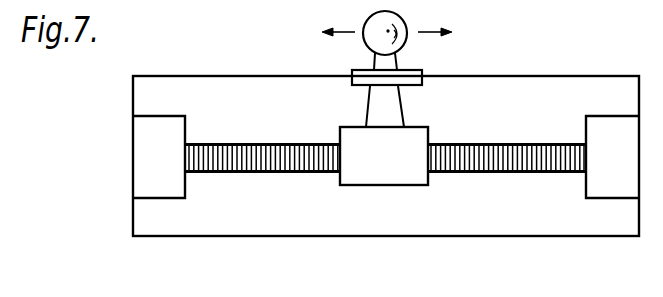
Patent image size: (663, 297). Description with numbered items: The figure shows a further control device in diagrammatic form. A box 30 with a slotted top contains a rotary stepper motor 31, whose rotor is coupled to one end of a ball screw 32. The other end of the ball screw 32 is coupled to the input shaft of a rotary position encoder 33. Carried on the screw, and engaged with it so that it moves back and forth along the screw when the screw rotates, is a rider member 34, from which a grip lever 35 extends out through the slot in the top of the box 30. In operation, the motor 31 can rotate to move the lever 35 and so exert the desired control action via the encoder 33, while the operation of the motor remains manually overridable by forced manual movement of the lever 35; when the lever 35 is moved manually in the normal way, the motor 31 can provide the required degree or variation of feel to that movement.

The box 30 is at (553, 76).
The rotary stepper motor 31 is at (138, 175).
The ball screw 32 is at (262, 174).
The rotary position encoder 33 is at (612, 125).
The rider member 34 is at (397, 177).
The grip lever 35 is at (372, 100).